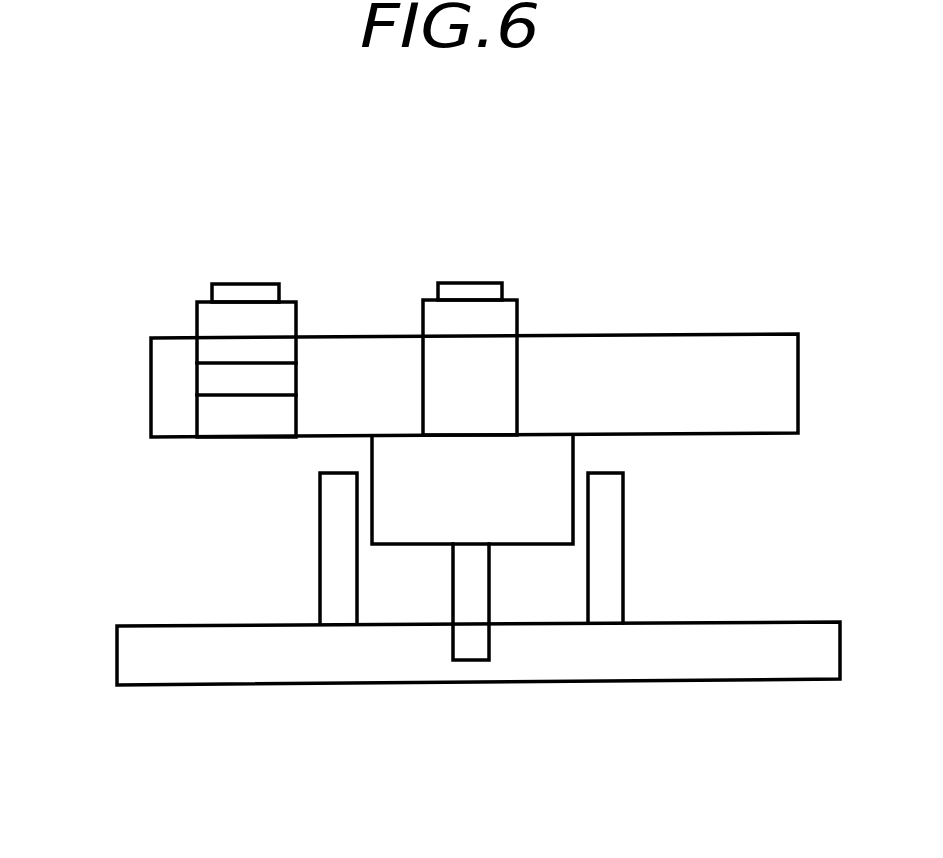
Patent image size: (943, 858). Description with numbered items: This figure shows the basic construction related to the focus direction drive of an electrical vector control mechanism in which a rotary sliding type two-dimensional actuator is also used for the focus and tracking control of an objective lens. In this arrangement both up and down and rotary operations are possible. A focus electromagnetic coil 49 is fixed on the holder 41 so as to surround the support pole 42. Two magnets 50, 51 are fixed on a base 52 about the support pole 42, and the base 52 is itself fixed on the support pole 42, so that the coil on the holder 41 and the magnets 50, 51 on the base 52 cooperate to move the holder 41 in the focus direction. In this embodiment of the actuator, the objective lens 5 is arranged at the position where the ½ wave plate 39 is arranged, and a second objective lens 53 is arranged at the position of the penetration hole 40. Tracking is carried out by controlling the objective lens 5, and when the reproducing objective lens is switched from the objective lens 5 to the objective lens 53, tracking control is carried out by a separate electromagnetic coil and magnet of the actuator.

The objective lens 5 is at (197, 318).
The ½ wave plate 39 is at (218, 397).
The penetration hole 40 is at (442, 372).
The holder 41 is at (745, 425).
The support pole 42 is at (465, 602).
The focus electromagnetic coil 49 is at (553, 434).
The magnet 50 is at (320, 565).
The magnet 51 is at (623, 578).
The base 52 is at (600, 680).
The objective lens 53 is at (503, 280).